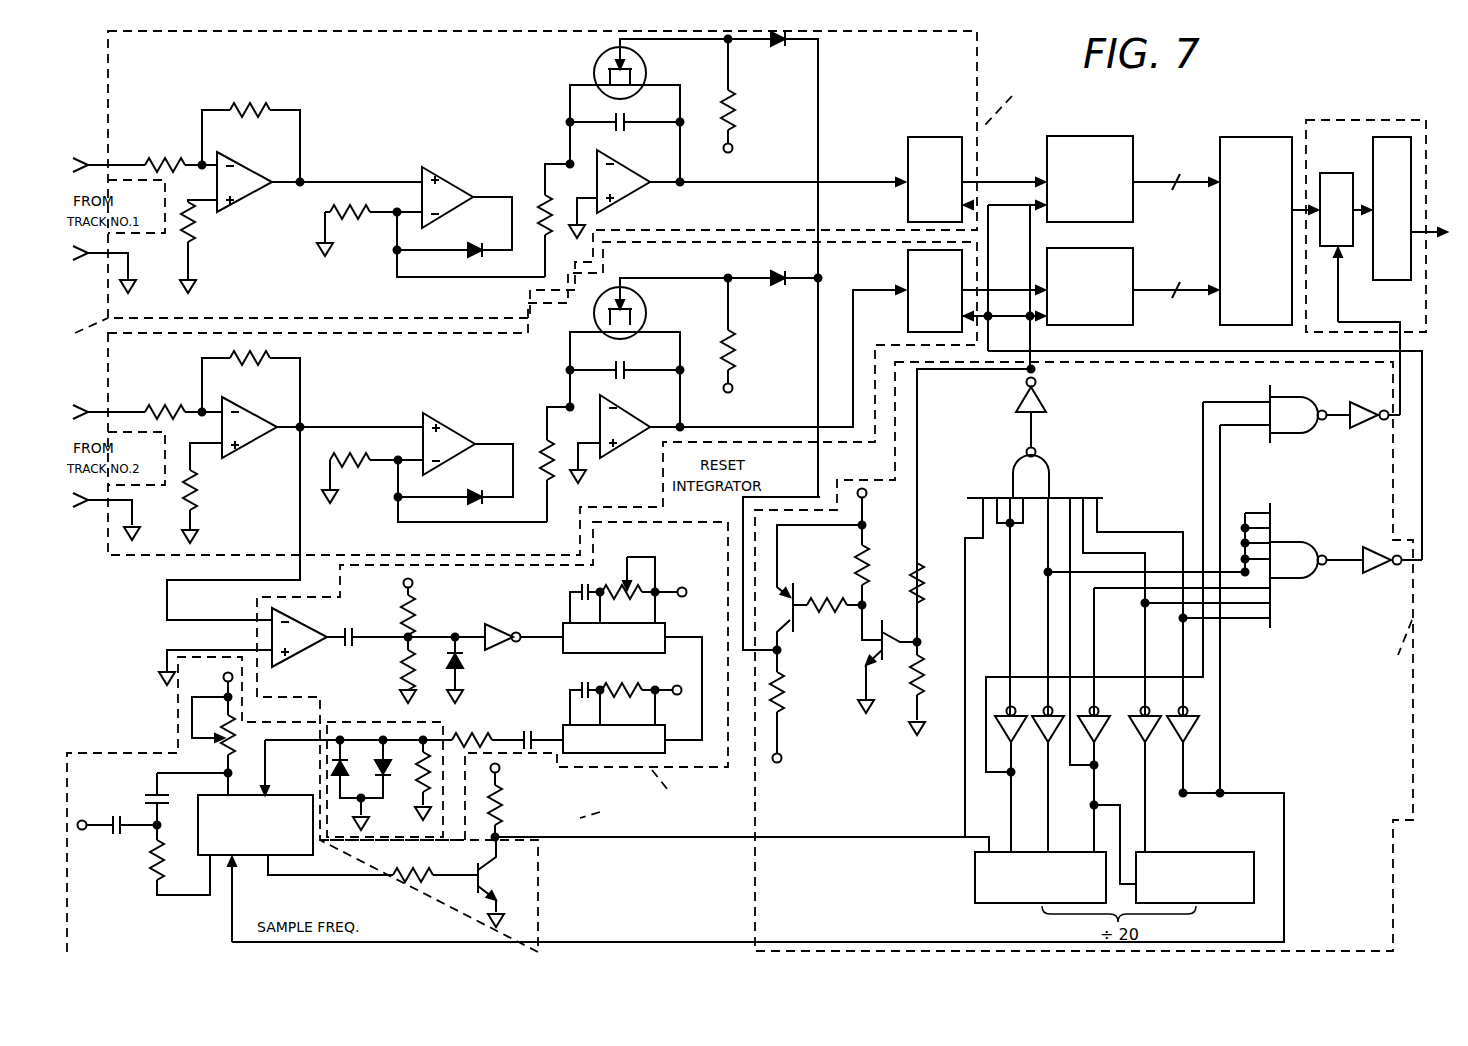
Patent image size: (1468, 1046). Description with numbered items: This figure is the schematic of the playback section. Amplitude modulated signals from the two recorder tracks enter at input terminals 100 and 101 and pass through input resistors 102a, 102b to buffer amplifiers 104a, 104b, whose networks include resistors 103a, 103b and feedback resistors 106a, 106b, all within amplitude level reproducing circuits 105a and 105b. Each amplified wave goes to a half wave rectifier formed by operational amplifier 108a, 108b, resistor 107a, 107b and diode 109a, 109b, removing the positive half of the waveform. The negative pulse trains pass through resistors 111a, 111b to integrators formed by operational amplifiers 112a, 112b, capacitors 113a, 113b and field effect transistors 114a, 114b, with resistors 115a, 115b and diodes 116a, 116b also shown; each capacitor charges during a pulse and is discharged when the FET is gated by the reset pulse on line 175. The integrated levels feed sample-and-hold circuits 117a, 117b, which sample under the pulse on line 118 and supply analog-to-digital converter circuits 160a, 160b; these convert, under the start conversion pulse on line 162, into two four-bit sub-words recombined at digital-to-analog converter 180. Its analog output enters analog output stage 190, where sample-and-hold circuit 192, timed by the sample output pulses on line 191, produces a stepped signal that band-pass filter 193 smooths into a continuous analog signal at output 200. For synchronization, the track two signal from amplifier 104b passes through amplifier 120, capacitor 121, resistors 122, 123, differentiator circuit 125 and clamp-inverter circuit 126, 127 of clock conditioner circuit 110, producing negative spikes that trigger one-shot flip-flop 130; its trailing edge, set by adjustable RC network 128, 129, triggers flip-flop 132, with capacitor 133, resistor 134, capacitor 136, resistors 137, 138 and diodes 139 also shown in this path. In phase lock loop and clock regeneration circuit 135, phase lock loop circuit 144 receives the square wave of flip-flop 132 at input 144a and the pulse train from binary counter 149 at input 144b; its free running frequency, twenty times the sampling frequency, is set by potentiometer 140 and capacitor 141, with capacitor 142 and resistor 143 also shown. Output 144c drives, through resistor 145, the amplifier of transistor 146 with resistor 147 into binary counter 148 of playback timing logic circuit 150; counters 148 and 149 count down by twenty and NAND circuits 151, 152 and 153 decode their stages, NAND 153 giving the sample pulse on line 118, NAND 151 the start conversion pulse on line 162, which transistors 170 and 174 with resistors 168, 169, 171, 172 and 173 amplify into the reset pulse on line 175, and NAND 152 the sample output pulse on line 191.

The input terminal 100 is at (82, 160).
The input terminal 101 is at (85, 404).
The input resistor 102a is at (165, 158).
The input resistor 102b is at (170, 408).
The resistor 103a is at (195, 235).
The resistor 103b is at (197, 508).
The buffer amplifier 104a is at (250, 198).
The buffer amplifier 104b is at (252, 410).
The amplitude level reproducing circuit 105a is at (574, 130).
The amplitude level reproducing circuit 105b is at (87, 328).
The feedback resistor 106a is at (255, 108).
The feedback resistor 106b is at (272, 358).
The resistor 107a is at (355, 225).
The resistor 107b is at (358, 475).
The operational amplifier 108a is at (440, 168).
The operational amplifier 108b is at (465, 420).
The diode 109a is at (468, 243).
The diode 109b is at (470, 492).
The clock conditioner circuit 110 is at (671, 797).
The resistor 111a is at (540, 180).
The resistor 111b is at (538, 430).
The operational amplifier 112a is at (633, 193).
The operational amplifier 112b is at (630, 445).
The capacitor 113a is at (627, 124).
The capacitor 113b is at (628, 372).
The field effect transistor 114a is at (600, 62).
The field effect transistor 114b is at (640, 302).
The resistor 115a is at (735, 120).
The resistor 115b is at (737, 360).
The diode 116a is at (772, 45).
The diode 116b is at (780, 286).
The sample-and-hold circuit 117a is at (912, 137).
The sample-and-hold circuit 117b is at (905, 283).
The line 118 is at (996, 220).
The amplifier 120 is at (316, 622).
The capacitor 121 is at (355, 628).
The resistor 122 is at (412, 614).
The resistor 123 is at (400, 672).
The differentiator circuit 125 is at (368, 672).
The clamp-inverter circuit 126 is at (462, 670).
The clamp-inverter circuit 127 is at (497, 624).
The adjustable RC network 128 is at (578, 590).
The adjustable RC network 129 is at (617, 596).
The one-shot multivibrator or flip-flop circuit 130 is at (563, 645).
The flip-flop circuit 132 is at (563, 728).
The capacitor 133 is at (575, 695).
The resistor 134 is at (635, 689).
The phase lock loop and clock regeneration circuit 135 is at (596, 806).
The capacitor 136 is at (522, 735).
The resistor 137 is at (452, 735).
The resistor 138 is at (418, 788).
The clamp diodes 139 is at (361, 784).
The potentiometer 140 is at (232, 745).
The capacitor 141 is at (145, 790).
The capacitor 142 is at (108, 832).
The resistor 143 is at (148, 878).
The phase lock loop circuit 144 is at (248, 856).
The input 144a is at (268, 790).
The input 144b is at (228, 890).
The output 144c is at (290, 865).
The resistor 145 is at (390, 880).
The transistor 146 is at (501, 882).
The resistor 147 is at (490, 812).
The binary counter 148 is at (975, 872).
The binary counter 149 is at (1198, 852).
The playback timing logic circuit 150 is at (1416, 626).
The NAND circuit 151 is at (1050, 476).
The NAND circuit 152 is at (1295, 395).
The NAND circuit 153 is at (1288, 540).
The analog-to-digital converter circuit 160a is at (1108, 136).
The analog-to-digital converter circuit 160b is at (1130, 250).
The line 162 is at (1005, 333).
The resistor 168 is at (925, 585).
The resistor 169 is at (910, 700).
The transistor 170 is at (860, 660).
The resistor 171 is at (866, 560).
The resistor 172 is at (822, 598).
The resistor 173 is at (782, 705).
The transistor 174 is at (792, 630).
The line 175 is at (820, 490).
The digital-to-analog converter circuit 180 is at (1220, 137).
The analog output stage 190 is at (1306, 120).
The line 191 is at (1405, 348).
The sample-and-hold circuit 192 is at (1336, 173).
The band-pass filter 193 is at (1385, 137).
The sample output 200 is at (1445, 225).